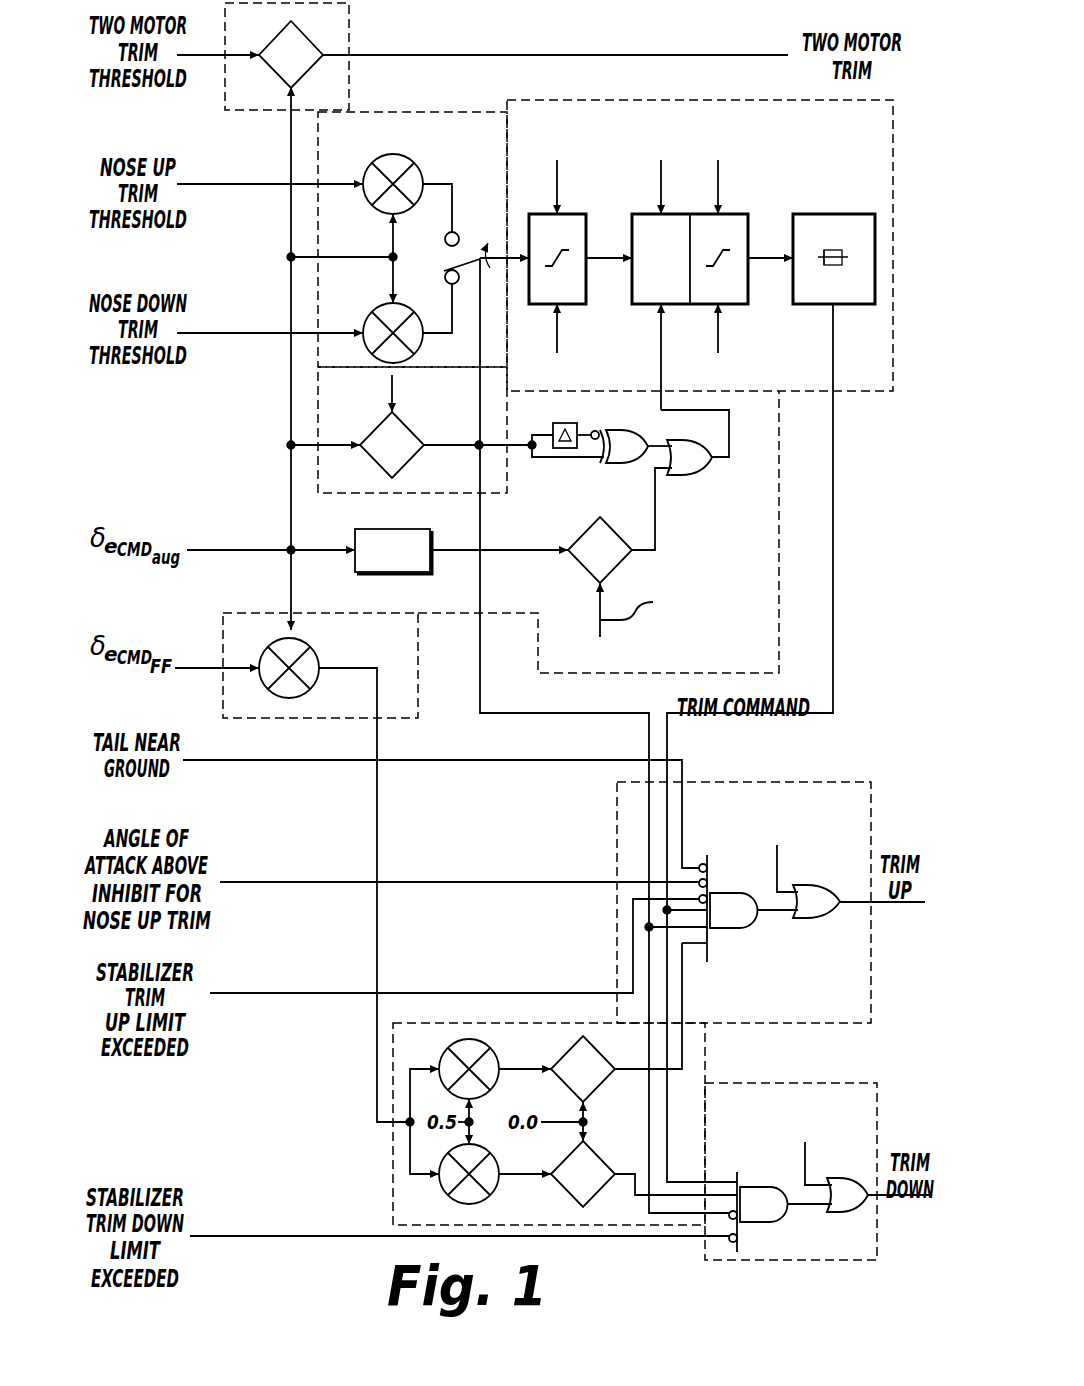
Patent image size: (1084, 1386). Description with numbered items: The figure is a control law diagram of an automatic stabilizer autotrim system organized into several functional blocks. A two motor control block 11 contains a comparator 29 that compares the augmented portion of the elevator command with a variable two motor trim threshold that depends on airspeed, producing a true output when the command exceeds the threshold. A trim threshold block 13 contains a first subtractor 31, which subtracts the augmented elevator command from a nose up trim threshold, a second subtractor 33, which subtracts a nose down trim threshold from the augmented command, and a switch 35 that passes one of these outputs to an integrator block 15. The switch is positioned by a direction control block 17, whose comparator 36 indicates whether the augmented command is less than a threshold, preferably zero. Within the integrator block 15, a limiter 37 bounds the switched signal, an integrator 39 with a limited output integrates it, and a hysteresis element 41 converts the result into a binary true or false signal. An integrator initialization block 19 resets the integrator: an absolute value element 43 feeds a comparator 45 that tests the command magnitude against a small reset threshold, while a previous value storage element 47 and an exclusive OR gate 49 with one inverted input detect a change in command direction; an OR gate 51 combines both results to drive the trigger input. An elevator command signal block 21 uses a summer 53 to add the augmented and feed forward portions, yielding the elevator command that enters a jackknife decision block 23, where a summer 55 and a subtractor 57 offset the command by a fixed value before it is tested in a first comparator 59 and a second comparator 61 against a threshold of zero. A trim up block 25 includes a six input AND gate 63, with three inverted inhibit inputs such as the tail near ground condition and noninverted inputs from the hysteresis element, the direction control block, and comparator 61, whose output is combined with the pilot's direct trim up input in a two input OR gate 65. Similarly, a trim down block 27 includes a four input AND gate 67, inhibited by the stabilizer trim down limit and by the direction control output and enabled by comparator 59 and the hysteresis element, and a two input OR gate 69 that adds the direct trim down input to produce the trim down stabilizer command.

The two motor control block 11 is at (350, 47).
The trim threshold block 13 is at (443, 116).
The integrator block 15 is at (567, 104).
The direction control block 17 is at (318, 396).
The integrator initialization block 19 is at (779, 568).
The elevator command signal block 21 is at (410, 698).
The jackknife decision block 23 is at (704, 1072).
The trim up block 25 is at (735, 788).
The trim down block 27 is at (762, 1090).
The comparator 29 is at (306, 40).
The first subtractor 31 is at (389, 153).
The second subtractor 33 is at (373, 308).
The switch 35 is at (494, 226).
The comparator 36 is at (414, 460).
The limiter 37 is at (543, 212).
The integrator 39 is at (645, 212).
The hysteresis element 41 is at (810, 214).
The absolute value element 43 is at (395, 574).
The comparator 45 is at (582, 535).
The previous value storage element 47 is at (568, 423).
The exclusive OR gate 49 is at (618, 468).
The OR gate 51 is at (698, 476).
The summer 53 is at (311, 689).
The summer 55 is at (497, 1186).
The subtractor 57 is at (496, 1053).
The first comparator 59 is at (605, 1188).
The second comparator 61 is at (607, 1055).
The six input AND gate 63 is at (740, 930).
The two input OR gate 65 is at (813, 920).
The four input AND gate 67 is at (772, 1224).
The two input OR gate 69 is at (836, 1214).